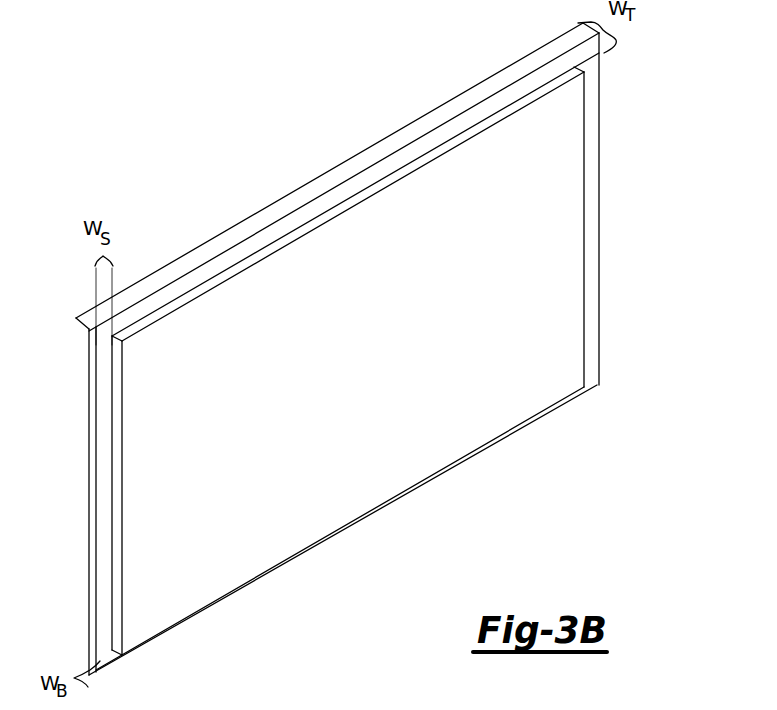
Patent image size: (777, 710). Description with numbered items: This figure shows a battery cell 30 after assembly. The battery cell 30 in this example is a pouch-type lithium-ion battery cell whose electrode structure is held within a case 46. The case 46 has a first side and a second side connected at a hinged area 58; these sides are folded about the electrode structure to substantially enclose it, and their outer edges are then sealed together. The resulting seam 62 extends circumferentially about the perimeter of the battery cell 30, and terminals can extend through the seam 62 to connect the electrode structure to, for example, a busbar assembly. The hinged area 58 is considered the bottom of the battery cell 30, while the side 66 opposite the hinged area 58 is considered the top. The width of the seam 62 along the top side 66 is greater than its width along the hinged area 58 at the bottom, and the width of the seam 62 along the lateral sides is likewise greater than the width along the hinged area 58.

The battery cell 30 is at (363, 354).
The case 46 is at (568, 256).
The hinged area 58 is at (272, 600).
The seam 62 is at (202, 250).
The side 66 is at (411, 112).